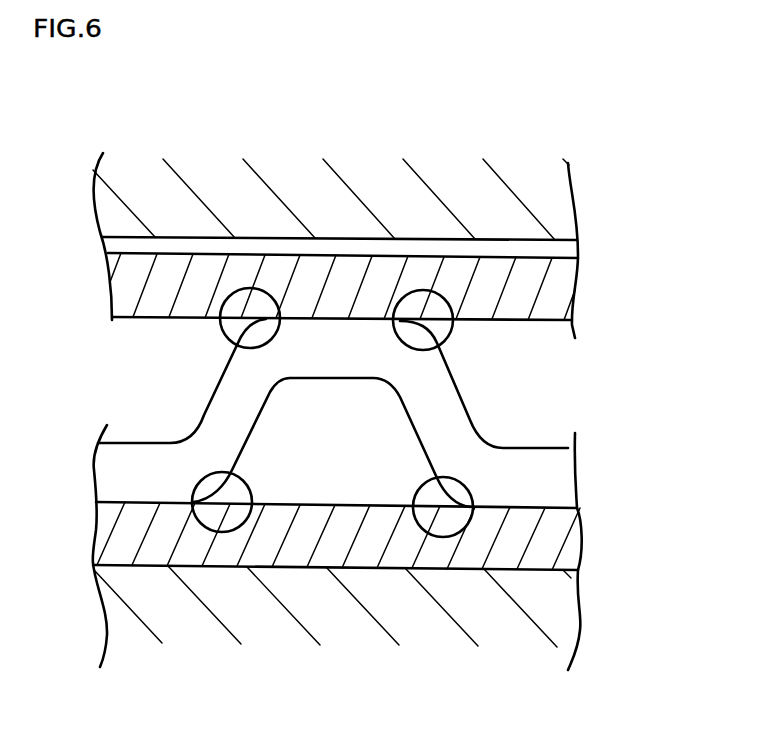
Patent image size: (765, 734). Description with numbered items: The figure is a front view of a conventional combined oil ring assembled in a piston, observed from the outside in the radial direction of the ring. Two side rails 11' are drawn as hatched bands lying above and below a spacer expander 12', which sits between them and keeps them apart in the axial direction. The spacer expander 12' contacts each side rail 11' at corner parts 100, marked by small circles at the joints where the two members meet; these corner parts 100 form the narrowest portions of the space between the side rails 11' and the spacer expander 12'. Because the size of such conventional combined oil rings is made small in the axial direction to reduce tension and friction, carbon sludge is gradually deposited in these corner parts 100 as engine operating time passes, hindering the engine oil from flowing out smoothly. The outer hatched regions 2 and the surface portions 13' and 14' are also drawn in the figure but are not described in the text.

The base body 2 is at (536, 192).
The hatched layer 11' is at (385, 406).
The gap 12' is at (541, 399).
The upper surface layer 13' is at (339, 239).
The surface layer 14' is at (383, 593).
The connection portion 100 is at (235, 303).